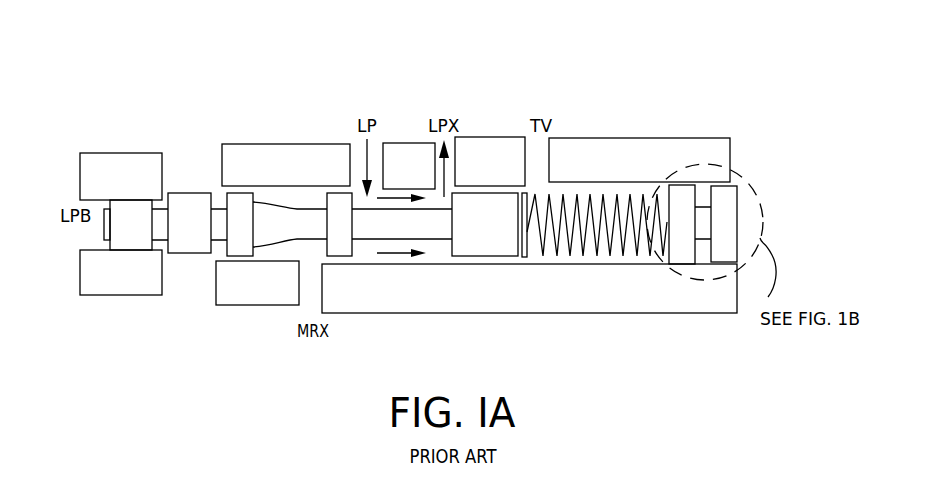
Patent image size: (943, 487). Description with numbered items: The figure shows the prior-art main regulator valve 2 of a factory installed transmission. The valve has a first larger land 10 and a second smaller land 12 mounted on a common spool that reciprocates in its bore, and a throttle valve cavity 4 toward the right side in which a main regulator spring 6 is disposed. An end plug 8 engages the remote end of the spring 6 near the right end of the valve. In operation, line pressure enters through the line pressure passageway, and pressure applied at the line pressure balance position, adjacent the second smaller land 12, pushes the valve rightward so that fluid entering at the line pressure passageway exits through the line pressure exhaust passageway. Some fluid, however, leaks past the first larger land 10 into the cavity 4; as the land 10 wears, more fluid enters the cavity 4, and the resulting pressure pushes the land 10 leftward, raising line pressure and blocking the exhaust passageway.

The main regulator valve 2 is at (606, 117).
The TV (throttle valve) cavity 4 is at (642, 194).
The main regulator spring 6 is at (597, 238).
The end plug 8 is at (737, 213).
The first larger land 10 is at (485, 256).
The second smaller land 12 is at (107, 228).